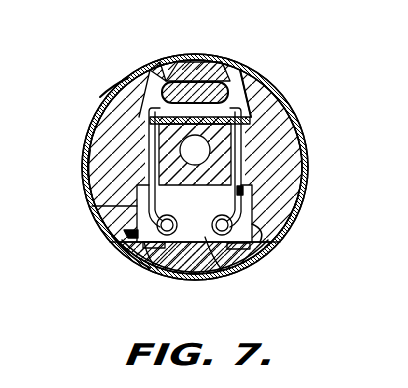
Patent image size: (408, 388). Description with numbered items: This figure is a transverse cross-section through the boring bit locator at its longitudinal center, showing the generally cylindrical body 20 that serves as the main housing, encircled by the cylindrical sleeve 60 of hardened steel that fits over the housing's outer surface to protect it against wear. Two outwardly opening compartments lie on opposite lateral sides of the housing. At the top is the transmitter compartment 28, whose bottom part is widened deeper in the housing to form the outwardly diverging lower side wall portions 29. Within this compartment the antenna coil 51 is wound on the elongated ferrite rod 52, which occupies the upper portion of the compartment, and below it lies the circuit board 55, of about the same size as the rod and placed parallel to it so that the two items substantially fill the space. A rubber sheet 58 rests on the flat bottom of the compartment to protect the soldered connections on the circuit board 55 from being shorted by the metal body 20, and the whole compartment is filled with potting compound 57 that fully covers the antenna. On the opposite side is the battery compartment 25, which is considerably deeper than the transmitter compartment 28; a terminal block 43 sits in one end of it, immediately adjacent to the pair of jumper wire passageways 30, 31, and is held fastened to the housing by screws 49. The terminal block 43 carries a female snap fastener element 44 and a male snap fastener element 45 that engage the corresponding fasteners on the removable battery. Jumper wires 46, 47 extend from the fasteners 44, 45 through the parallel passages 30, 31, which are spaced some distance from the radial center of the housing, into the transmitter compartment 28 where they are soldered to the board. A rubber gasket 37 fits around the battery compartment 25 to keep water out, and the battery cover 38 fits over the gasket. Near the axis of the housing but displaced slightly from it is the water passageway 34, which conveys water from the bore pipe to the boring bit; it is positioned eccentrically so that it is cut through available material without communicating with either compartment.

The cylindrical body 20 is at (284, 162).
The battery compartment 25 is at (252, 223).
The transmitter compartment 28 is at (237, 69).
The outwardly diverging lower side wall portions 29 is at (268, 110).
The jumper wire passageway 30 is at (148, 141).
The jumper wire passageway 31 is at (238, 147).
The water passageway 34 is at (193, 166).
The rubber gasket 37 is at (124, 229).
The battery cover 38 is at (198, 278).
The terminal block 43 is at (228, 248).
The female snap fastener element 44 is at (170, 247).
The male snap fastener element 45 is at (252, 262).
The jumper wire 46 is at (137, 206).
The jumper wire 47 is at (243, 198).
The screws 49 is at (143, 266).
The coil 51 is at (192, 80).
The ferrite rod 52 is at (166, 70).
The circuit board 55 is at (246, 101).
The potting compound 57 is at (210, 68).
The rubber sheet 58 is at (110, 104).
The cylindrical sleeve 60 is at (86, 171).